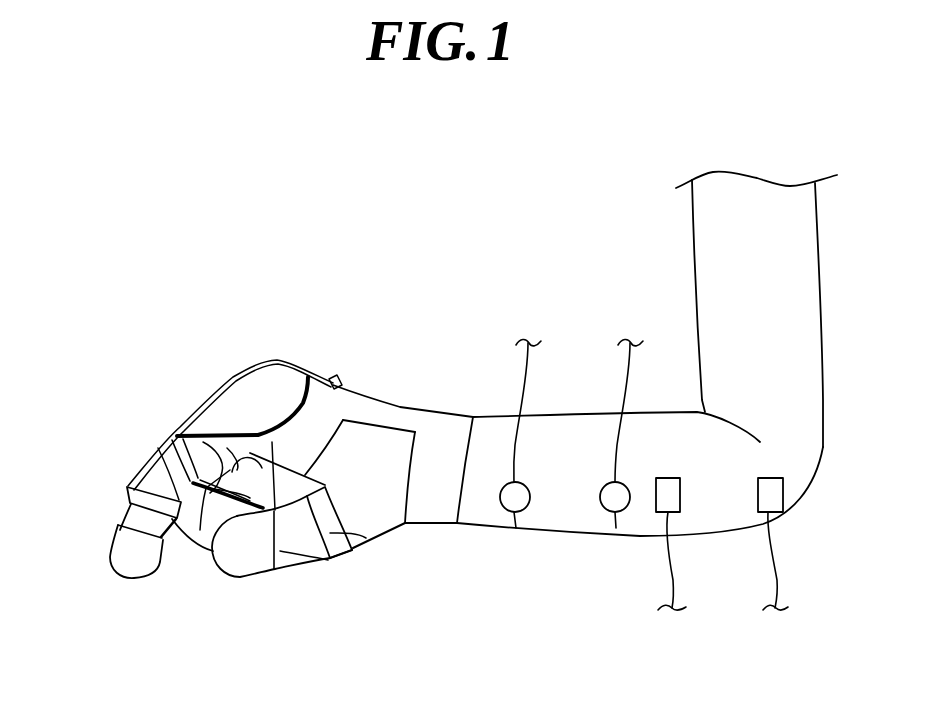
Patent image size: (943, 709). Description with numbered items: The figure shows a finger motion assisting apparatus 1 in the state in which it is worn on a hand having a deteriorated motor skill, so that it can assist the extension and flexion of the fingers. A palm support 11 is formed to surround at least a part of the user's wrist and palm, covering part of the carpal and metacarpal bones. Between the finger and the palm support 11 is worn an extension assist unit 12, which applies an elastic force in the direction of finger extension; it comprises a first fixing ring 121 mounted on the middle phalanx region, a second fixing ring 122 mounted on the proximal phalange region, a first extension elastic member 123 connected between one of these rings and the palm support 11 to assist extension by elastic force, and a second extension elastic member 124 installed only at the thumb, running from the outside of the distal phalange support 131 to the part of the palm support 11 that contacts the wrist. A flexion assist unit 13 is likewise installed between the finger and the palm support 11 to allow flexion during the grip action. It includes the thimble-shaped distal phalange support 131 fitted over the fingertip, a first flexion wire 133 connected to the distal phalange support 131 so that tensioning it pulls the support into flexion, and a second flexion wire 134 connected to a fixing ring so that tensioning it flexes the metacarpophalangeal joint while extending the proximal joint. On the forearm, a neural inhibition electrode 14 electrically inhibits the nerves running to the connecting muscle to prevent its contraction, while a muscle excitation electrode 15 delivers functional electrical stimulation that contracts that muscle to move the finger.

The finger motion assisting apparatus 1 is at (449, 216).
The palm support 11 is at (407, 413).
The extension assist unit 12 is at (58, 411).
The first fixing ring 121 is at (130, 487).
The second fixing ring 122 is at (176, 437).
The first extension elastic member 123 is at (163, 443).
The second extension elastic member 124 is at (328, 560).
The flexion assist unit 13 is at (117, 657).
The distal phalange support 131 is at (143, 569).
The first flexion wire 133 is at (320, 557).
The second flexion wire 134 is at (240, 577).
The neural inhibition electrode 14 is at (765, 512).
The muscle excitation electrode 15 is at (616, 528).